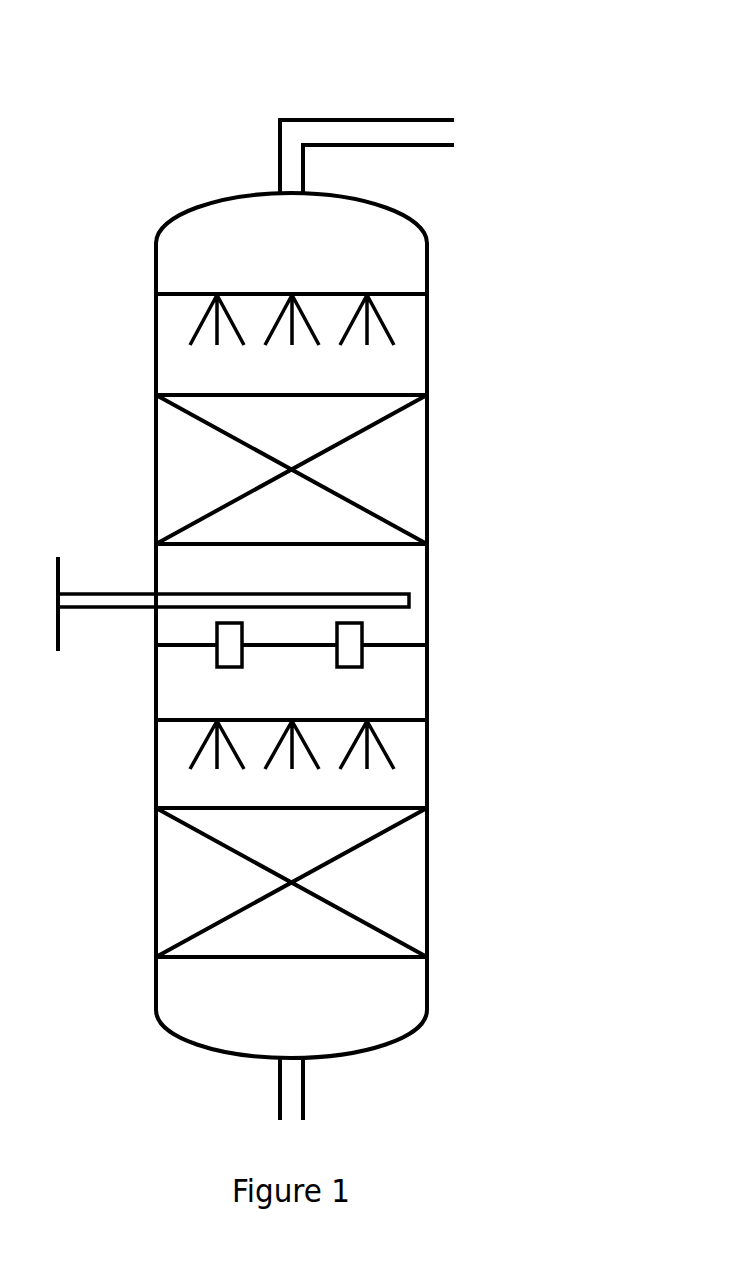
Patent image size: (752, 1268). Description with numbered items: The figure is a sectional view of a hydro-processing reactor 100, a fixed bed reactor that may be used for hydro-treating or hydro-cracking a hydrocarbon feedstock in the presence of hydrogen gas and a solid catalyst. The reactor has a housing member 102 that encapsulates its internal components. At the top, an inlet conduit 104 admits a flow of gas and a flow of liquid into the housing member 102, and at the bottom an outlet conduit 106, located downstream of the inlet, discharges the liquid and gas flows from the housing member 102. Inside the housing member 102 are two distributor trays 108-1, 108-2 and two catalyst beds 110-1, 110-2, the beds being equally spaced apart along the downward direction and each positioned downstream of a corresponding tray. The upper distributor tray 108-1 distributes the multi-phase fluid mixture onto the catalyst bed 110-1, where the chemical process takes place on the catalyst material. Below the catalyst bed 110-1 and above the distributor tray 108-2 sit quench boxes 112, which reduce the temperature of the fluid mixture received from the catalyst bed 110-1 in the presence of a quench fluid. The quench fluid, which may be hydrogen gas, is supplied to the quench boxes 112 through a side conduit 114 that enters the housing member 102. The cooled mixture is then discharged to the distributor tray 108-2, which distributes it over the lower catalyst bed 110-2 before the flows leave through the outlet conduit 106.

The hydro-processing reactor 100 is at (210, 78).
The housing member 102 is at (155, 277).
The inlet conduit 104 is at (366, 119).
The outlet conduit 106 is at (303, 1090).
The distributor tray 108-1 is at (393, 293).
The distributor tray 108-2 is at (408, 720).
The catalyst bed 110-1 is at (400, 446).
The catalyst bed 110-2 is at (407, 898).
The quench box 112 is at (380, 626).
The conduit 114 is at (88, 594).